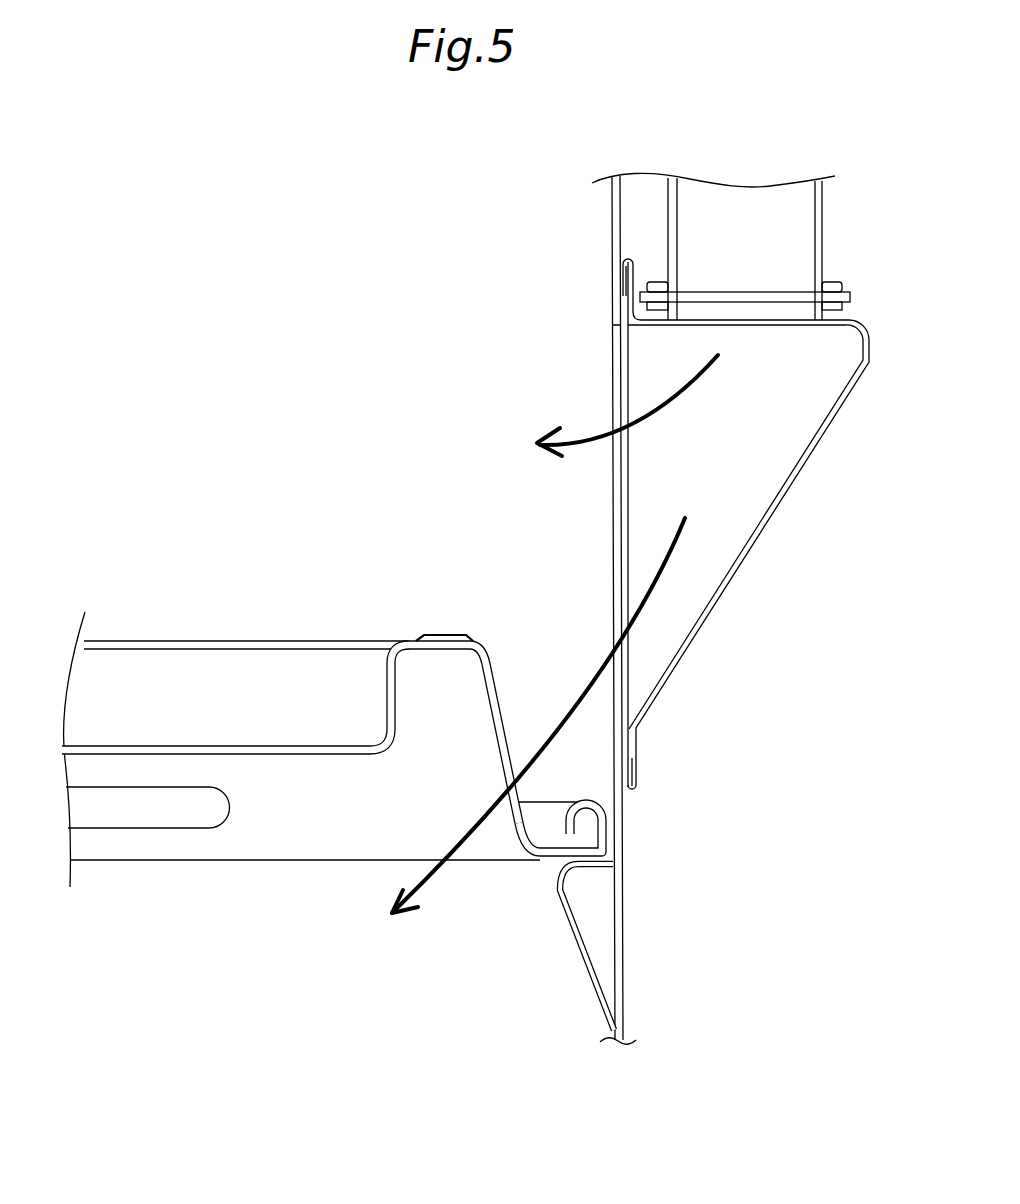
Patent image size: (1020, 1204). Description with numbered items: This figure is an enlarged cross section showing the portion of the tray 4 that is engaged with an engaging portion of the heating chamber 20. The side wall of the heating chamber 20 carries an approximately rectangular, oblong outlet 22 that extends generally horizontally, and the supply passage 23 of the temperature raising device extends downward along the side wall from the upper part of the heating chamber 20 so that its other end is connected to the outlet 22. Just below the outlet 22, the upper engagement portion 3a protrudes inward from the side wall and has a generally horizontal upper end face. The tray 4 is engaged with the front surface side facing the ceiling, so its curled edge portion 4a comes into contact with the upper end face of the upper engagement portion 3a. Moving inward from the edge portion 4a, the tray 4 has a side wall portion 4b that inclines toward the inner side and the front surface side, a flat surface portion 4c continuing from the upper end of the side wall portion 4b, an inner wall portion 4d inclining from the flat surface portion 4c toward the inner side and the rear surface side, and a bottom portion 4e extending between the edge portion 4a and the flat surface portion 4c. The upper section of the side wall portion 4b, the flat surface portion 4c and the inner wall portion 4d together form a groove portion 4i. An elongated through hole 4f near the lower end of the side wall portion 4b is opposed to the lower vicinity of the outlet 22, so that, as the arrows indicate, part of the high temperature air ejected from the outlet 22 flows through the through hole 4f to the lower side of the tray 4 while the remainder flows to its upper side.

The upper engagement portion 3a is at (575, 934).
The tray 4 is at (332, 729).
The curled edge portion 4a is at (590, 801).
The side wall portion 4b is at (497, 680).
The flat surface portion 4c is at (449, 640).
The inner wall portion 4d is at (388, 695).
The bottom portion 4e is at (170, 743).
The through hole 4f is at (530, 818).
The groove portion 4i is at (402, 684).
The heating chamber 20 is at (603, 250).
The outlet 22 is at (629, 794).
The supply passage 23 is at (822, 235).